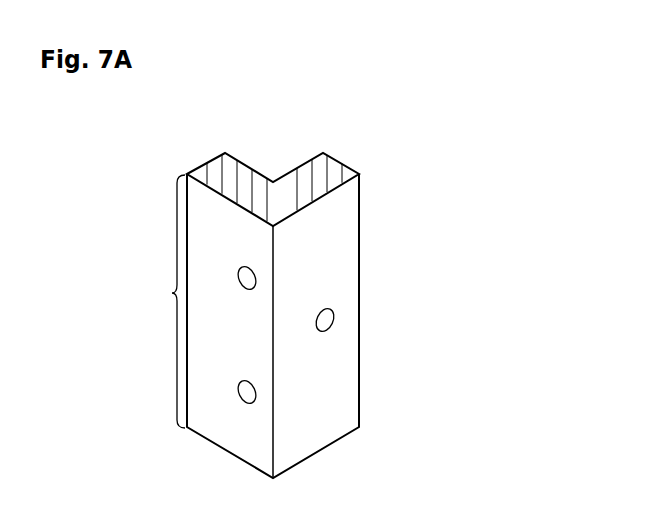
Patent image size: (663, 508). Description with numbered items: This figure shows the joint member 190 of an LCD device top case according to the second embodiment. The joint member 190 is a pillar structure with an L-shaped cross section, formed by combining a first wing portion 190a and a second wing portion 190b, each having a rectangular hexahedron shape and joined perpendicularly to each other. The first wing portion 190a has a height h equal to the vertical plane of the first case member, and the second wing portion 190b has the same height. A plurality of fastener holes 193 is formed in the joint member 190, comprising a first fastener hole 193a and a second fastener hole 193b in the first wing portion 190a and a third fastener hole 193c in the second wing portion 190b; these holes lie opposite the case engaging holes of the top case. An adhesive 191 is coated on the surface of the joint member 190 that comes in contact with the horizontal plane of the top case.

The joint member 190 is at (169, 112).
The adhesive 191 is at (313, 175).
The first wing portion 190a is at (225, 428).
The second wing portion 190b is at (345, 405).
The fastener holes 193 is at (445, 387).
The first fastener hole 193a is at (247, 277).
The second fastener hole 193b is at (247, 392).
The third fastener hole 193c is at (325, 320).